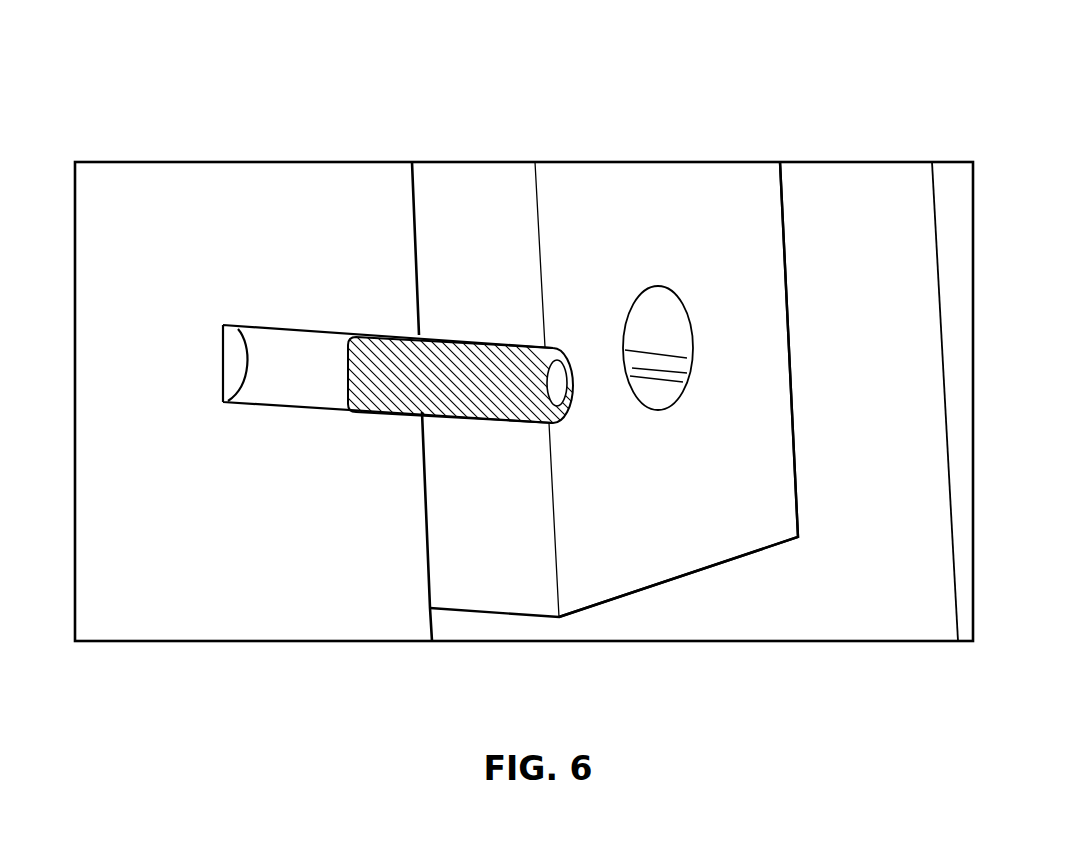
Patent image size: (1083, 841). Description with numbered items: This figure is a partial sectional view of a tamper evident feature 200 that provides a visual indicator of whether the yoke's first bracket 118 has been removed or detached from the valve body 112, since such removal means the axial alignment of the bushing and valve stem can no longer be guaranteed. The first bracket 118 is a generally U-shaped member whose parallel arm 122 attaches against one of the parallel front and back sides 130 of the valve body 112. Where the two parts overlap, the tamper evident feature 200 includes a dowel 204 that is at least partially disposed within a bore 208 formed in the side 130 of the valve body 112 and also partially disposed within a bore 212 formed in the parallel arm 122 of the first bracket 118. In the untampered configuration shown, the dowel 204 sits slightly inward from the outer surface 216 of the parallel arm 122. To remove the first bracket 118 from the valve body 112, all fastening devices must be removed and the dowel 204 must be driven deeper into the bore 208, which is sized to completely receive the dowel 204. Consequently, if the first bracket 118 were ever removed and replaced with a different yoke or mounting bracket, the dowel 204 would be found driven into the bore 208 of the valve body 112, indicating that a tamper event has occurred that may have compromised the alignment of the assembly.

The tamper evident feature 200 is at (866, 103).
The valve body 112 is at (332, 598).
The first bracket 118 is at (614, 408).
The parallel arm 122 is at (695, 208).
The back side 130 is at (822, 597).
The dowel 204 is at (450, 357).
The bore 208 is at (297, 340).
The bore 212 is at (566, 350).
The outer surface 216 is at (652, 462).